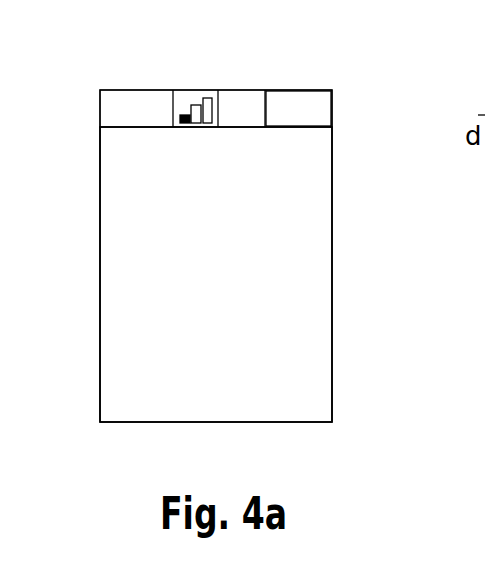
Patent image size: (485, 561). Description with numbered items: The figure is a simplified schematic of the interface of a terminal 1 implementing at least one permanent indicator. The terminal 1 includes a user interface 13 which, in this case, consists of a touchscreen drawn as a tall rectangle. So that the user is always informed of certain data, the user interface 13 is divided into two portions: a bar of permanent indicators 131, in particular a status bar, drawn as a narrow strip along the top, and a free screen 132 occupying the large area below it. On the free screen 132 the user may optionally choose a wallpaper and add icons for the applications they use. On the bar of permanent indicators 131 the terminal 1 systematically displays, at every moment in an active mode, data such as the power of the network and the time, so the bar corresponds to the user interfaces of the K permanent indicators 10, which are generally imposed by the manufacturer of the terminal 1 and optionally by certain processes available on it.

The terminal 1 is at (332, 215).
The user interface 13 is at (205, 393).
The bar of permanent indicators 131 is at (100, 102).
The free screen 132 is at (118, 282).
The permanent indicators 10 is at (255, 72).